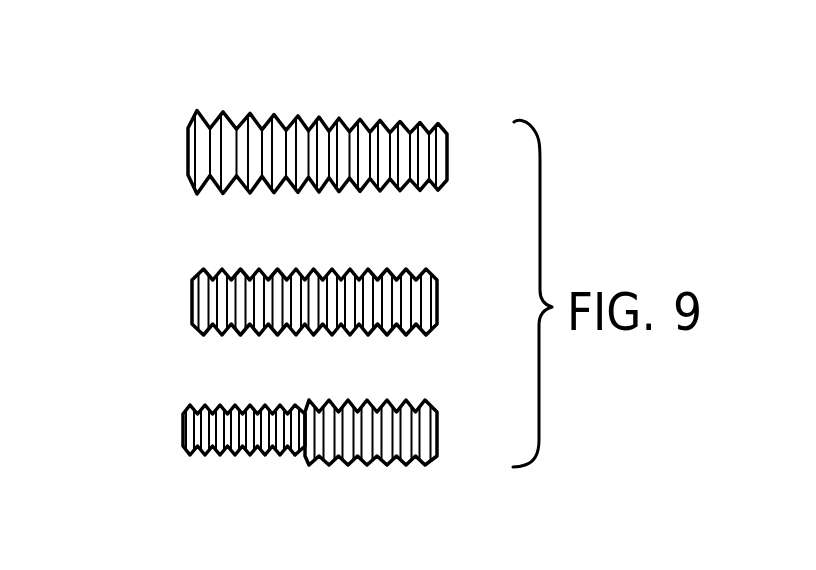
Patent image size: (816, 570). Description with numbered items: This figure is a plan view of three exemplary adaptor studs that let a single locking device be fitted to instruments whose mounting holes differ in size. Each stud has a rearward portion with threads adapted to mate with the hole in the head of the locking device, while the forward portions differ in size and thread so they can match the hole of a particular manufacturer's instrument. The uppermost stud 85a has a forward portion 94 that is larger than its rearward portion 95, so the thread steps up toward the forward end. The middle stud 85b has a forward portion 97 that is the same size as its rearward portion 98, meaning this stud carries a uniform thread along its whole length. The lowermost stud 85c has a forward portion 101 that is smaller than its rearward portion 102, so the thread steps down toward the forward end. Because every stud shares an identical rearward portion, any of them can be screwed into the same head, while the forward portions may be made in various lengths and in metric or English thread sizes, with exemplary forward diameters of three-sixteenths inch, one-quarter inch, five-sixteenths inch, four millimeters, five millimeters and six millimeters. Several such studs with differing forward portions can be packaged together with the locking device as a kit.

The stud 85a is at (187, 154).
The forward portion 94 is at (246, 112).
The rearward portion 95 is at (377, 126).
The stud 85b is at (192, 297).
The forward portion 97 is at (252, 327).
The rearward portion 98 is at (383, 328).
The stud 85c is at (183, 430).
The forward portion 101 is at (253, 452).
The rearward portion 102 is at (388, 464).